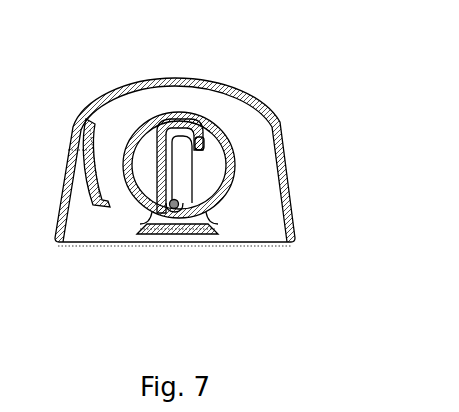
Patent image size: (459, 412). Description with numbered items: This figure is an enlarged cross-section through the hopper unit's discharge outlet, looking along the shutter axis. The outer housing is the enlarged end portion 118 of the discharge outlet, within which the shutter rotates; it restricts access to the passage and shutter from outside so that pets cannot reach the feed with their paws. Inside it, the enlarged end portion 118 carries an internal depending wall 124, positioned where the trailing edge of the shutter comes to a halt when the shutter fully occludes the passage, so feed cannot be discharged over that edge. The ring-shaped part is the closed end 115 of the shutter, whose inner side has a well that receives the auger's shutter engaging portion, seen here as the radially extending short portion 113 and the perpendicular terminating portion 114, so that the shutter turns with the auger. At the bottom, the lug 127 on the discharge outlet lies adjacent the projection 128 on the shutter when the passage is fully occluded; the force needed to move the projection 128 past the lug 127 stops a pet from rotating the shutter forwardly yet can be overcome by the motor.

The short portion 113 is at (173, 182).
The terminating portion 114 is at (204, 143).
The closed end 115 is at (175, 124).
The enlarged end portion 118 is at (263, 113).
The depending wall 124 is at (90, 160).
The lug 127 is at (175, 224).
The projection 128 is at (152, 208).